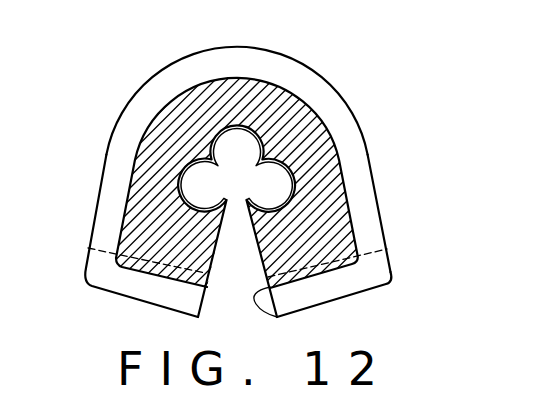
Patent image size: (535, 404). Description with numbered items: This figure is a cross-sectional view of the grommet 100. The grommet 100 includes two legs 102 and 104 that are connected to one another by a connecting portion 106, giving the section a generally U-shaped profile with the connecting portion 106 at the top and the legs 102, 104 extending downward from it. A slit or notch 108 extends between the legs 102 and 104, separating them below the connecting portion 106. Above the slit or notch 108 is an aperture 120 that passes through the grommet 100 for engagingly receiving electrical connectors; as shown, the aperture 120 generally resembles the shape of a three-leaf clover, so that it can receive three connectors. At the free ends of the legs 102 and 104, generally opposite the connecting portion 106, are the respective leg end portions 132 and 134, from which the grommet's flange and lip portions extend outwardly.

The grommet 100 is at (350, 62).
The leg 102 is at (208, 302).
The leg 104 is at (280, 317).
The connecting portion 106 is at (283, 54).
The slit or notch 108 is at (233, 303).
The aperture 120 is at (314, 119).
The leg end portion 132 is at (90, 288).
The leg end portion 134 is at (383, 288).